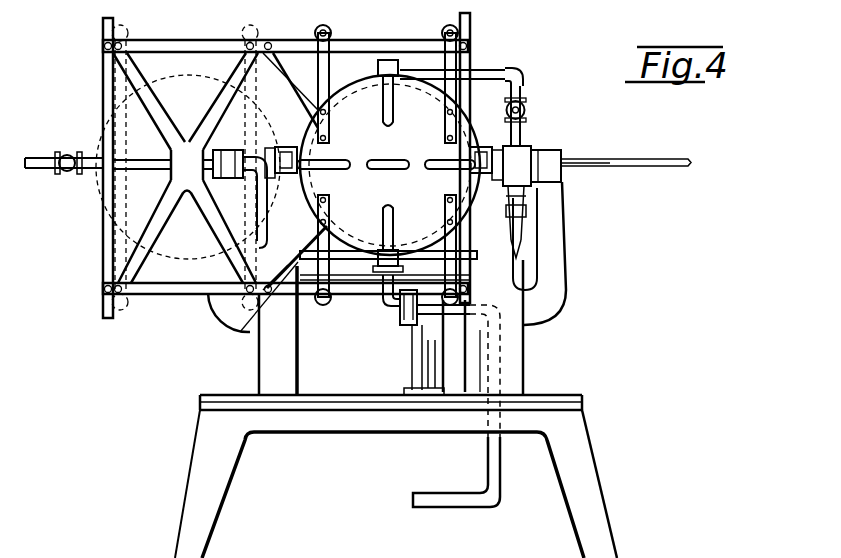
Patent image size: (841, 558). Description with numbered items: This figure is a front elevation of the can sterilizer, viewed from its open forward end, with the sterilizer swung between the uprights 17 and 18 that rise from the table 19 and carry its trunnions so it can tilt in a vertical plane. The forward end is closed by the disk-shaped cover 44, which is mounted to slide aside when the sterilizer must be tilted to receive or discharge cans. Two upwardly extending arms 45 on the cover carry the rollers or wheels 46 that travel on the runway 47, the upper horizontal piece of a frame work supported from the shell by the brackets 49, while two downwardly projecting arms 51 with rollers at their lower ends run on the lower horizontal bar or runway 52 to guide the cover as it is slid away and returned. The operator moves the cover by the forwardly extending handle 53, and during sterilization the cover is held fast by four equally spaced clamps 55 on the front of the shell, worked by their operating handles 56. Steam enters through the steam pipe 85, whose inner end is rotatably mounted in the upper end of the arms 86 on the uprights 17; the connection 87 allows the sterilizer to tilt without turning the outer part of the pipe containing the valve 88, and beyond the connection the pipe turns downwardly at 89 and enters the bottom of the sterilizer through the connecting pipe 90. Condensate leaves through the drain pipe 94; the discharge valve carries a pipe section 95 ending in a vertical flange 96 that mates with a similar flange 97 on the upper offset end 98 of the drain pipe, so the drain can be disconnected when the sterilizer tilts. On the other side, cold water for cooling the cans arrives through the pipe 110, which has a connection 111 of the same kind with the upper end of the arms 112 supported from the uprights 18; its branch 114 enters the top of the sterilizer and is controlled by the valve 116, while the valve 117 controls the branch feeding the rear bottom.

The upright 17 is at (282, 320).
The upright 18 is at (520, 258).
The table 19 is at (373, 432).
The cover 44 is at (390, 165).
The upwardly extending arms 45 is at (286, 159).
The rollers or wheels 46 is at (318, 32).
The runway 47 is at (180, 43).
The brackets 49 is at (304, 82).
The downwardly projecting arms 51 is at (326, 271).
The lower horizontal bar or runway 52 is at (352, 288).
The handle 53 is at (404, 172).
The clamps 55 is at (485, 150).
The operating handles 56 is at (385, 118).
The steam pipe 85 is at (46, 172).
The arms 86 is at (226, 272).
The connection 87 is at (228, 150).
The valve 88 is at (67, 174).
The downward turn of pipe 89 is at (252, 222).
The connecting pipe 90 is at (335, 242).
The drain pipe 94 is at (487, 470).
The pipe section 95 is at (398, 306).
The flange 96 is at (402, 322).
The flange 97 is at (414, 331).
The upper offset end 98 is at (500, 340).
The cold water pipe 110 is at (610, 167).
The connection 111 is at (546, 150).
The arms 112 is at (549, 202).
The branch 114 is at (494, 70).
The valve 116 is at (527, 110).
The valve 117 is at (530, 214).